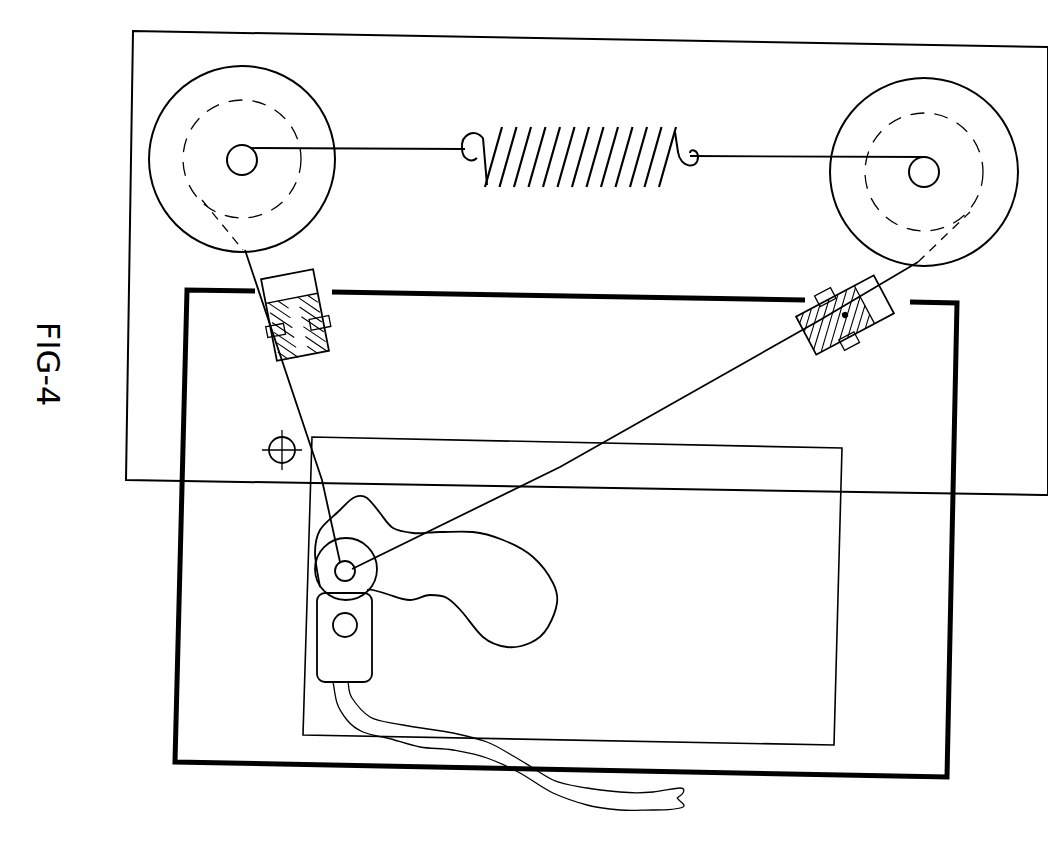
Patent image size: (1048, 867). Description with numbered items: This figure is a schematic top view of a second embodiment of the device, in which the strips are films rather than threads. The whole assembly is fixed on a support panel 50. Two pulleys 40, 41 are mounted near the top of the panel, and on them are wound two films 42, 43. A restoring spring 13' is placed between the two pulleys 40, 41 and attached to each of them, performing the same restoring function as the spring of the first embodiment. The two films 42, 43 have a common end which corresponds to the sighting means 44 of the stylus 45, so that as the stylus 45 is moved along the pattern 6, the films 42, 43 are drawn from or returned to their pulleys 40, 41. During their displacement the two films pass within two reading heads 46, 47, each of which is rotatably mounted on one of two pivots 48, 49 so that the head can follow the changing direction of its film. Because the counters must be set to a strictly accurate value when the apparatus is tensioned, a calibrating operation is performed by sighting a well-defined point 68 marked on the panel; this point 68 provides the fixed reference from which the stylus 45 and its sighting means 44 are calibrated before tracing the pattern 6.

The support panel 50 is at (757, 54).
The pulley 41 is at (317, 115).
The pulley 40 is at (862, 118).
The restoring spring 13' is at (587, 128).
The film 43 is at (312, 410).
The film 42 is at (643, 418).
The pivot 49 is at (292, 292).
The reading head 47 is at (325, 345).
The reading head 46 is at (848, 286).
The pivot 48 is at (887, 320).
The well-defined point 68 is at (270, 445).
The sighting means 44 is at (340, 578).
The pattern 6 is at (557, 595).
The stylus 45 is at (362, 665).